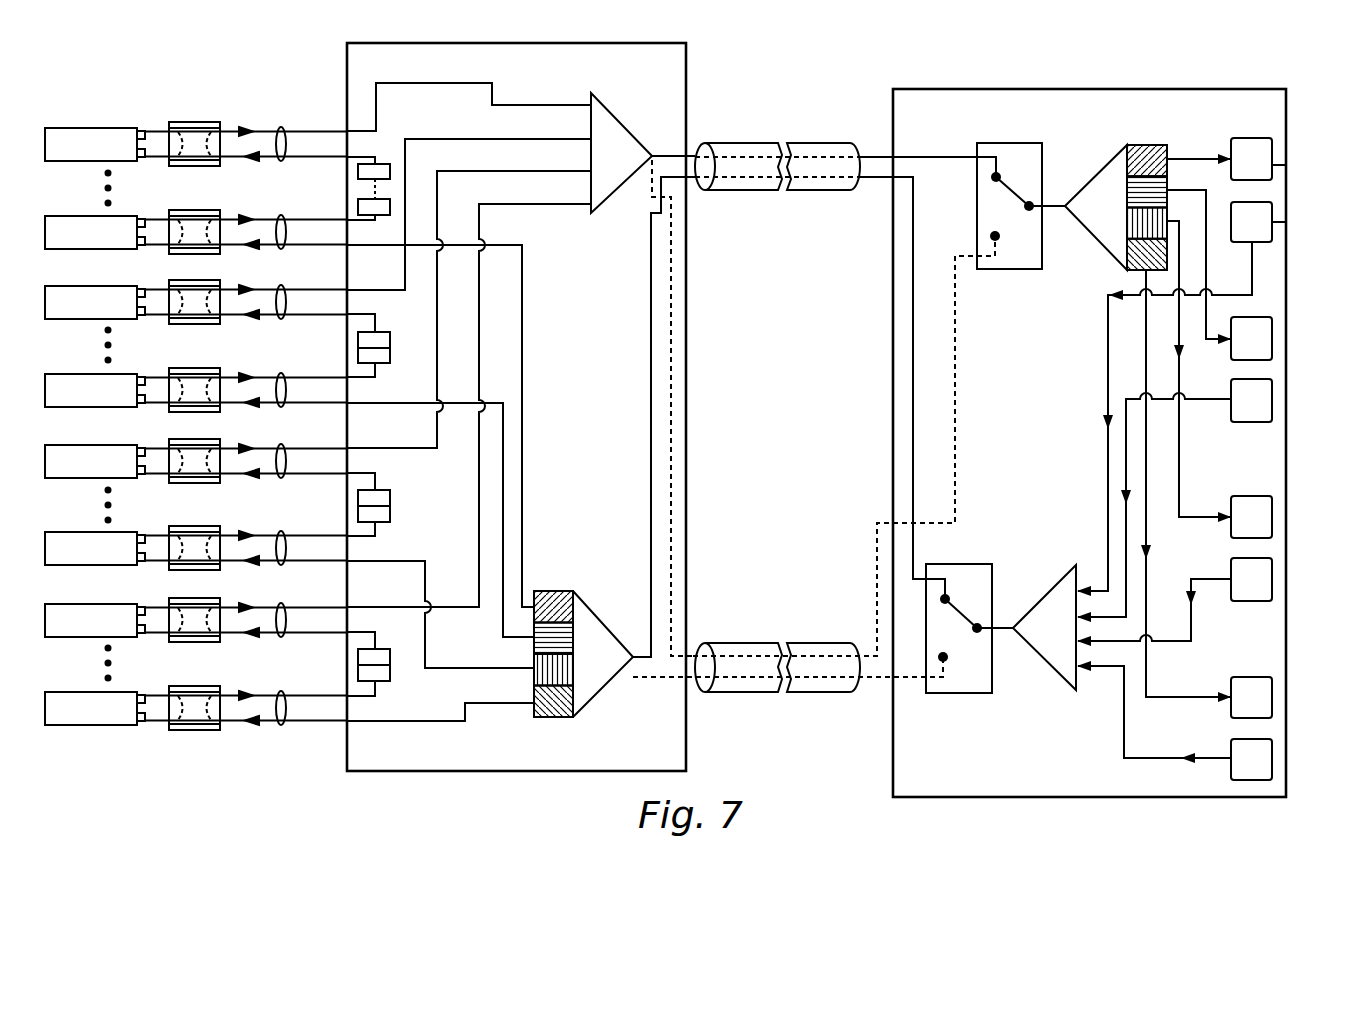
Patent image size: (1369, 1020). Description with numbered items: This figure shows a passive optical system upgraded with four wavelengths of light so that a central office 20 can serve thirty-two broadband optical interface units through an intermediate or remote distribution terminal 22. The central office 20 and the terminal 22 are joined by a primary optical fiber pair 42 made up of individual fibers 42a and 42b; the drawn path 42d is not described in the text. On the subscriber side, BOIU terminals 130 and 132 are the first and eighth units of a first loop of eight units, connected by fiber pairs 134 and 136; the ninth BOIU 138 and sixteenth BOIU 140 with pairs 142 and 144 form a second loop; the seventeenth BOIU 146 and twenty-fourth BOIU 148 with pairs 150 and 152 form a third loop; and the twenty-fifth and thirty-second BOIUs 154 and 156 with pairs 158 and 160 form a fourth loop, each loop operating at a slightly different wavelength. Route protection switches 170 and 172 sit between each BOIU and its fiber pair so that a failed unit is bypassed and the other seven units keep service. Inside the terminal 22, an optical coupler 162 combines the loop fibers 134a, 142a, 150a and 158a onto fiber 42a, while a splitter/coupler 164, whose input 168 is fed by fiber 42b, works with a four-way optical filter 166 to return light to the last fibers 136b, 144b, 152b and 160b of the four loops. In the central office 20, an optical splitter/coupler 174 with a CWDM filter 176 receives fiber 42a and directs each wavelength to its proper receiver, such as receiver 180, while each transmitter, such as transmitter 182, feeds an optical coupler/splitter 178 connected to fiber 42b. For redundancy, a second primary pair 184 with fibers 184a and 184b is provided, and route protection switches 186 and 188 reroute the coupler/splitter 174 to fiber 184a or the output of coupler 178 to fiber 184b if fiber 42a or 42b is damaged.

The central office 20 is at (1287, 650).
The intermediate or remote distribution terminal 22 is at (688, 480).
The optical fiber pair 42 is at (763, 142).
The optical fiber 42a is at (812, 157).
The optical fiber 42b is at (650, 322).
The optical fiber path 42d is at (662, 150).
The BOIU terminal 130 is at (93, 128).
The BOIU terminal 132 is at (93, 216).
The optical fiber pair 134 is at (283, 128).
The optical fiber 134a is at (430, 83).
The optical fiber pair 136 is at (283, 216).
The optical fiber 136b is at (523, 357).
The BOIU 138 is at (93, 286).
The BOIU 140 is at (93, 374).
The optical fiber pair 142 is at (283, 286).
The optical fiber 142a is at (468, 138).
The optical fiber pair 144 is at (283, 374).
The optical fiber 144b is at (415, 406).
The BOIU 146 is at (93, 445).
The BOIU 148 is at (93, 532).
The optical fiber pair 150 is at (283, 445).
The optical fiber 150a is at (400, 450).
The optical fiber pair 152 is at (283, 532).
The optical fiber 152b is at (391, 566).
The BOIU 154 is at (93, 604).
The BOIU 156 is at (93, 692).
The optical fiber pair 158 is at (283, 604).
The optical fiber 158a is at (453, 607).
The optical fiber pair 160 is at (283, 692).
The optical fiber 160b is at (428, 723).
The optical coupler 162 is at (620, 192).
The splitter/coupler 164 is at (604, 690).
The four-way optical filter 166 is at (556, 718).
The input 168 is at (638, 652).
The route protection switch 170 is at (196, 122).
The route protection switch 172 is at (196, 210).
The optical splitter/coupler 174 is at (1095, 168).
The CWDM filter 176 is at (1147, 145).
The optical coupler/splitter 178 is at (1043, 593).
The receiver 180 is at (1286, 165).
The transmitter 182 is at (1286, 222).
The second pair of primary fibers 184 is at (757, 642).
The optical fiber 184a is at (670, 381).
The optical fiber 184b is at (821, 679).
The route protection switch 186 is at (1012, 270).
The route protection switch 188 is at (975, 693).